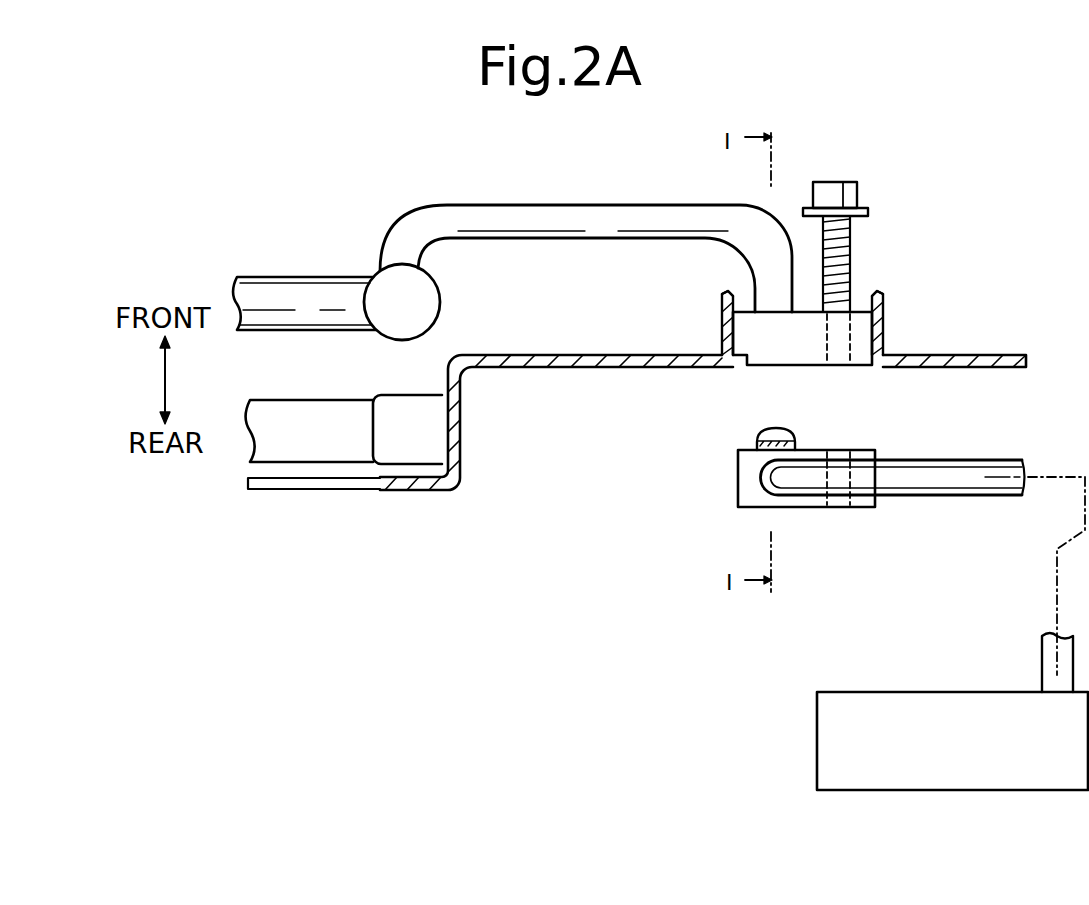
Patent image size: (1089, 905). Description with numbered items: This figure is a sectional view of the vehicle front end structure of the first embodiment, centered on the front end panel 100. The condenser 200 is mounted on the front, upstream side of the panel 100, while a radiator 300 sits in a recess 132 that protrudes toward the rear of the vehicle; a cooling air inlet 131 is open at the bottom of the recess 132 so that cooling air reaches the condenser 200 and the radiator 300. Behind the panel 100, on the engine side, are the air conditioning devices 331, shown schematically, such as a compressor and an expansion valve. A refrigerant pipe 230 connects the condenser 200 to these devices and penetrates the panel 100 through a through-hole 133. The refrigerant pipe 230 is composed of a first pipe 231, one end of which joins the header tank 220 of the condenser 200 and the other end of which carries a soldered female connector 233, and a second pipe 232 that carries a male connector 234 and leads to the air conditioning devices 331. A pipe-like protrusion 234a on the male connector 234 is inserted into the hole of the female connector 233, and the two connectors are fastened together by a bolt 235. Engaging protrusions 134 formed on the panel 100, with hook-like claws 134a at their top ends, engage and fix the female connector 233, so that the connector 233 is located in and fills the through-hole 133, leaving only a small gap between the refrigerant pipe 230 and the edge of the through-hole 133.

The front end panel 100 is at (472, 492).
The cooling air inlet 131 is at (292, 491).
The recess 132 is at (413, 418).
The through-hole 133 is at (737, 368).
The engaging protrusion 134 is at (722, 318).
The hook-like claw 134a is at (743, 300).
The condenser 200 is at (291, 288).
The header tank 220 is at (441, 305).
The refrigerant pipe 230 is at (722, 319).
The first pipe 231 is at (524, 205).
The second pipe 232 is at (972, 460).
The female connector 233 is at (862, 338).
The male connector 234 is at (862, 450).
The pipe-like protrusion 234a is at (782, 432).
The bolt 235 is at (848, 200).
The radiator 300 is at (290, 418).
The air conditioning devices 331 is at (952, 741).